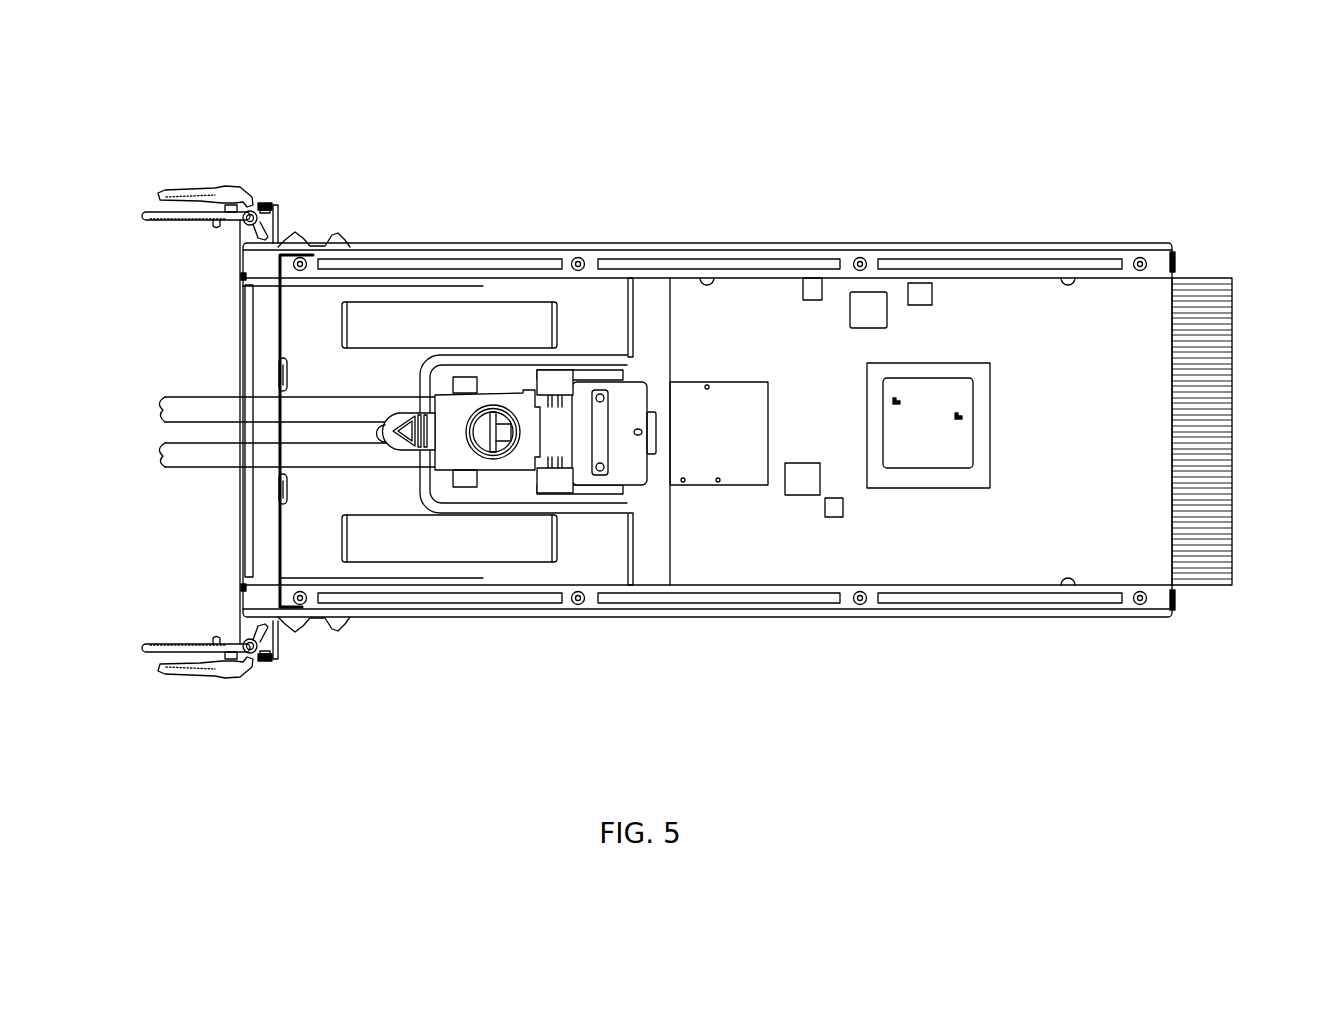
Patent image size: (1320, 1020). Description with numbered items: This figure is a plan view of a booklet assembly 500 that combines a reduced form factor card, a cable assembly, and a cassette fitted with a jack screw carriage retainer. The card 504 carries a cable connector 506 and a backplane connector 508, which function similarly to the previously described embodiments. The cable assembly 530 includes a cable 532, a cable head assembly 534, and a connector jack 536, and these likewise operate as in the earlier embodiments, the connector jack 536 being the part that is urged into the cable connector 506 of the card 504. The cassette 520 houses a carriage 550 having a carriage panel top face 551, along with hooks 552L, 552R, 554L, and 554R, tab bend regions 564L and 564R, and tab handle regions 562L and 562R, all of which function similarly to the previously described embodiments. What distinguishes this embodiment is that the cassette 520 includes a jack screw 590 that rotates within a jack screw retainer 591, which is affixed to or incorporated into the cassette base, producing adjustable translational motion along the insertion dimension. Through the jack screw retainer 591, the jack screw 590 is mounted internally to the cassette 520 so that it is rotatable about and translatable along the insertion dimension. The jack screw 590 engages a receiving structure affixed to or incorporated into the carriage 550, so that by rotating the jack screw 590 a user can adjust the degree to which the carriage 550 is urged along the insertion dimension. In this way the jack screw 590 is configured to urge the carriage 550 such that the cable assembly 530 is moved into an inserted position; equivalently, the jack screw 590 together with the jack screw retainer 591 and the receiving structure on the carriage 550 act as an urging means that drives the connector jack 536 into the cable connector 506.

The booklet assembly 500 is at (1068, 135).
The card 504 is at (953, 533).
The cable connector 506 is at (724, 431).
The backplane connector 508 is at (1210, 325).
The cassette 520 is at (300, 318).
The cable assembly 530 is at (210, 377).
The cable 532 is at (218, 458).
The cable head assembly 534 is at (620, 470).
The connector jack 536 is at (660, 462).
The carriage 550 is at (624, 441).
The carriage panel top face 551 is at (510, 373).
The hook 552L is at (465, 377).
The hook 552R is at (468, 483).
The hook 554L is at (560, 382).
The hook 554R is at (558, 483).
The tab handle region 562L is at (243, 279).
The tab handle region 562R is at (243, 586).
The tab bend region 564L is at (342, 240).
The tab bend region 564R is at (343, 625).
The jack screw 590 is at (385, 428).
The jack screw retainer 591 is at (377, 440).